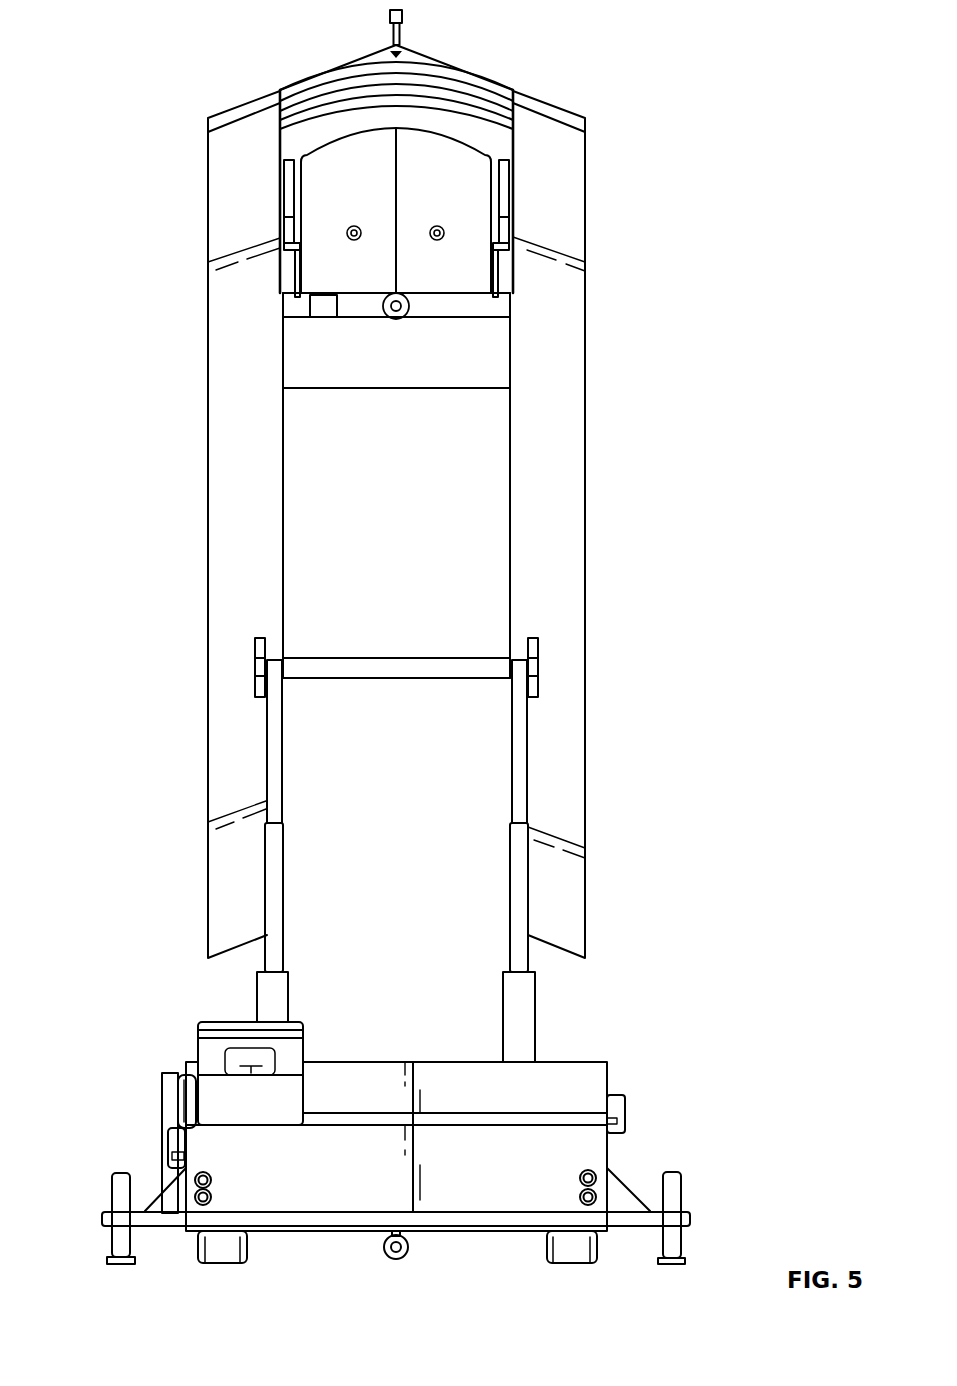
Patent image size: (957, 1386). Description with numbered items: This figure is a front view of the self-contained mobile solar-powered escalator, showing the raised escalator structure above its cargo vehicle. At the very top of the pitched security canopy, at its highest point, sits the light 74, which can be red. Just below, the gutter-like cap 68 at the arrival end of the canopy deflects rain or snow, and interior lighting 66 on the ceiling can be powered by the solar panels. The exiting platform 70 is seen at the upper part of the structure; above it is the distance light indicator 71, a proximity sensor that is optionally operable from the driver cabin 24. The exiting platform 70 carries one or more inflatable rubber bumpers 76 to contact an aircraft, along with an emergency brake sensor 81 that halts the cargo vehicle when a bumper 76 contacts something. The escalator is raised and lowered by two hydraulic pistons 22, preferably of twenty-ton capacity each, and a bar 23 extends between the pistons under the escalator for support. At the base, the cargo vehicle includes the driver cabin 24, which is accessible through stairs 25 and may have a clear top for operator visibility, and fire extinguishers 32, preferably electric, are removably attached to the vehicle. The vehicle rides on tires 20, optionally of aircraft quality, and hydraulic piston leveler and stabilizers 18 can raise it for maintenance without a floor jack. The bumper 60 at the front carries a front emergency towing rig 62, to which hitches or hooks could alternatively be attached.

The hydraulic piston leveler and stabilizers 18 is at (116, 1242).
The tires 20 is at (213, 1264).
The hydraulic pistons 22 is at (291, 967).
The bar 23 is at (354, 660).
The driver cabin 24 is at (204, 1016).
The stairs 25 is at (178, 1100).
The fire extinguishers 32 is at (168, 1146).
The bumper 60 is at (306, 1232).
The front emergency towing rig 62 is at (393, 1259).
The interior lighting 66 is at (354, 225).
The gutter-like cap 68 is at (330, 166).
The exiting platform 70 is at (480, 170).
The distance light indicator 71 is at (399, 319).
The light 74 is at (404, 16).
The inflatable rubber bumpers 76 is at (291, 306).
The emergency brake sensor 81 is at (323, 318).